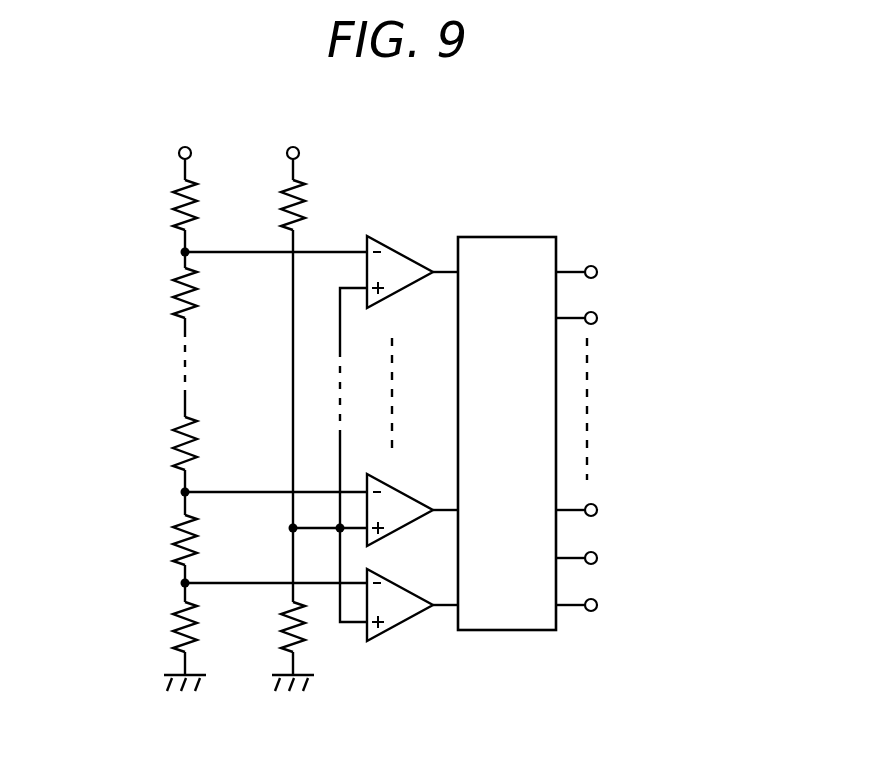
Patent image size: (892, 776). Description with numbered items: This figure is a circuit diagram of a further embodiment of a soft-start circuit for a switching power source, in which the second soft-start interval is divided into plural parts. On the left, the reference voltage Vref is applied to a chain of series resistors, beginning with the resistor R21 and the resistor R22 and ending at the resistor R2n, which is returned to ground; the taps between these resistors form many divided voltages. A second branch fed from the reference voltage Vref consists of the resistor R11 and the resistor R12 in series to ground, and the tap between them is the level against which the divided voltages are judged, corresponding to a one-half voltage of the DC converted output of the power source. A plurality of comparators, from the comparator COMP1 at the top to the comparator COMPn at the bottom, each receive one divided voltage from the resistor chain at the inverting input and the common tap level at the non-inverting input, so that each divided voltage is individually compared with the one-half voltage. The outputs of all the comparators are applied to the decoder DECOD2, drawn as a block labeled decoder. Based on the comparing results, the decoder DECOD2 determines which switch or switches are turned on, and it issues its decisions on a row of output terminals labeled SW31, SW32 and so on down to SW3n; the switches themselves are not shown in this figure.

The reference voltage Vref is at (180, 147).
The resistor R21 is at (176, 227).
The resistor R22 is at (176, 315).
The resistor R2n is at (174, 647).
The resistor R11 is at (284, 227).
The resistor R12 is at (282, 647).
The comparator COMP1 is at (386, 236).
The comparator COMPn is at (377, 637).
The decoder DECOD2 is at (527, 236).
The switch control output SW31 is at (597, 268).
The switch control output SW32 is at (597, 314).
The switch control output SW3n is at (597, 601).